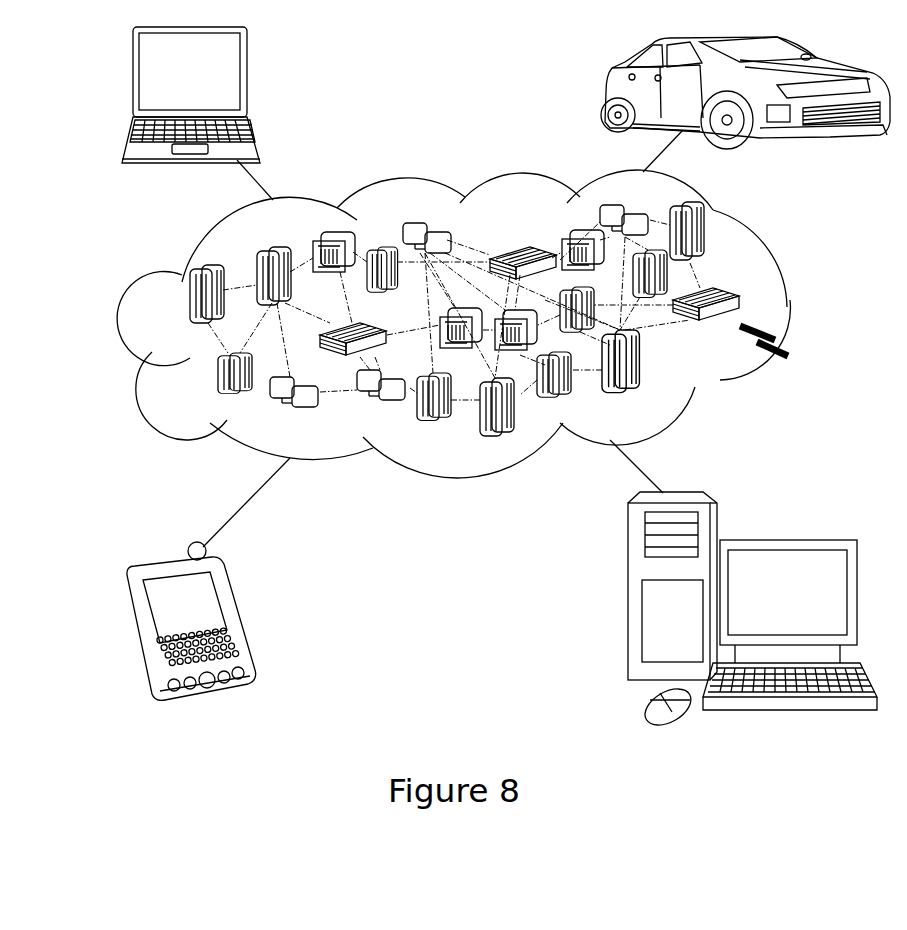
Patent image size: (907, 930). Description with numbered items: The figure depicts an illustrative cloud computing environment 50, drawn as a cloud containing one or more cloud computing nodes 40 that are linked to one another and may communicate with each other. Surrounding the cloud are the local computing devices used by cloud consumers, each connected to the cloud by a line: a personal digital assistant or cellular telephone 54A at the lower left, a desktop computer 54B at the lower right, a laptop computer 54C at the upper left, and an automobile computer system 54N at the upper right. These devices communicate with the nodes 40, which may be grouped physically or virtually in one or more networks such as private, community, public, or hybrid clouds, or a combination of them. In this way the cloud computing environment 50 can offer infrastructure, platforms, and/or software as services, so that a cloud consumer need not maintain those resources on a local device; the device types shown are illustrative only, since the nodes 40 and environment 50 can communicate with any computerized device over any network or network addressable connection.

The laptop computer 54C is at (247, 80).
The automobile computer system 54N is at (606, 90).
The cloud computing environment 50 is at (788, 305).
The cloud computing nodes 40 is at (782, 347).
The personal digital assistant or cellular telephone 54A is at (238, 617).
The desktop computer 54B is at (785, 538).